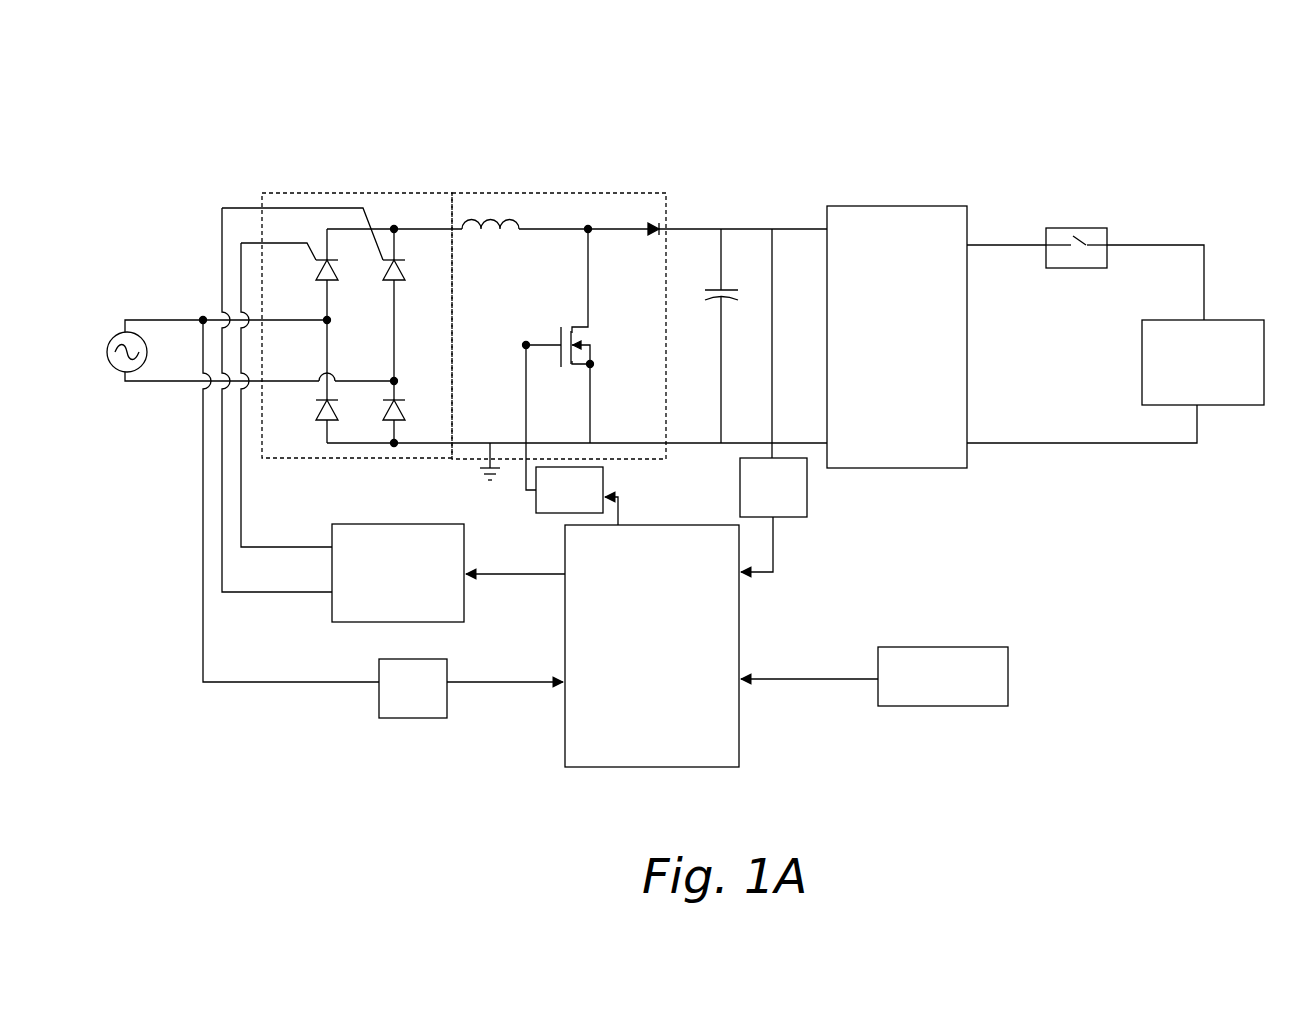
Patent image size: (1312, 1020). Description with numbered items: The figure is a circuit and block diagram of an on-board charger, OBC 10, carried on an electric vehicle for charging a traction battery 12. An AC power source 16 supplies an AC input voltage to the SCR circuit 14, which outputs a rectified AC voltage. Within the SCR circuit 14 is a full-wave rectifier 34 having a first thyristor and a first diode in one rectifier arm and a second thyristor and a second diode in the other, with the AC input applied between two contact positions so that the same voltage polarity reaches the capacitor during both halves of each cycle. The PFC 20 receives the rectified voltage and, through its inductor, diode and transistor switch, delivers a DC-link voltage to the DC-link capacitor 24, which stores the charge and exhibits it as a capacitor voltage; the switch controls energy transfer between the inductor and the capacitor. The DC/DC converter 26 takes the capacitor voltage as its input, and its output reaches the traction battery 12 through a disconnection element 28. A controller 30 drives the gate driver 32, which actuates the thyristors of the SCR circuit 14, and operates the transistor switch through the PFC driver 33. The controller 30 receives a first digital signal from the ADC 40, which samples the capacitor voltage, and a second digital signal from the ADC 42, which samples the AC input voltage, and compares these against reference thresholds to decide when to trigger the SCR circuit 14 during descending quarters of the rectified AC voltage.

The OBC 10 is at (1092, 120).
The traction battery 12 is at (1245, 320).
The SCR circuit 14 is at (355, 193).
The AC power source 16 is at (113, 340).
The PFC 20 is at (545, 193).
The DC-link capacitor 24 is at (727, 290).
The DC/DC converter 26 is at (885, 206).
The disconnection element 28 is at (1097, 228).
The controller 30 is at (740, 615).
The gate driver 32 is at (398, 523).
The PFC driver 33 is at (603, 474).
The full-wave rectifier 34 is at (402, 340).
The ADC 40 is at (807, 497).
The ADC 42 is at (413, 718).